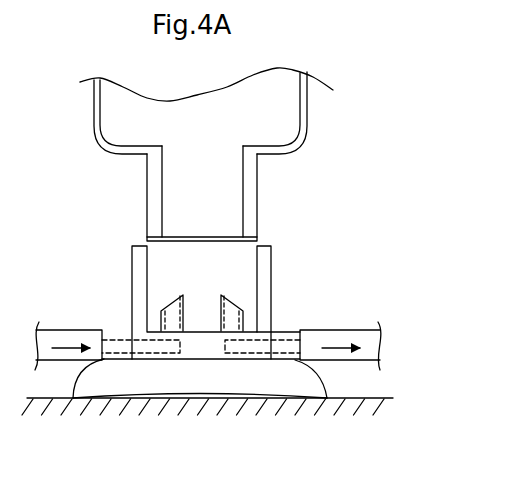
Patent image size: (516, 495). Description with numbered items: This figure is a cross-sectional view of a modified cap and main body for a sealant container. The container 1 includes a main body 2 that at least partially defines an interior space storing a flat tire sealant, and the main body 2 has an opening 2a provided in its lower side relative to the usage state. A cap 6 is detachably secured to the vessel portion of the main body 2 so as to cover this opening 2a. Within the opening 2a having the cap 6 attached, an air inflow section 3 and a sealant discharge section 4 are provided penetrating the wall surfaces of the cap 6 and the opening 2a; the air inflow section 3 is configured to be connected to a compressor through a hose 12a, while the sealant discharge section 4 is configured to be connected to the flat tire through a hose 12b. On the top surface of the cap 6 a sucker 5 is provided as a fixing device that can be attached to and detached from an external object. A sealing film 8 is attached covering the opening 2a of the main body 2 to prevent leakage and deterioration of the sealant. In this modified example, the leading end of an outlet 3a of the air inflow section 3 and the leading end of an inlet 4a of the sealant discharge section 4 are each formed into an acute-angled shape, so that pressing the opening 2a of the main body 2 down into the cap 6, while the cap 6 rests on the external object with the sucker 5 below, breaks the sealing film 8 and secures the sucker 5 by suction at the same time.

The container 1 is at (364, 183).
The main body 2 is at (305, 108).
The opening 2a is at (230, 192).
The air inflow section 3 is at (130, 360).
The outlet of air inflow section 3a is at (161, 321).
The sealant discharge section 4 is at (288, 360).
The inlet of sealant discharge section 4a is at (243, 316).
The sucker 5 is at (184, 374).
The cap 6 is at (129, 271).
The sealing film 8 is at (226, 241).
The hose 12a is at (52, 361).
The hose 12b is at (347, 361).